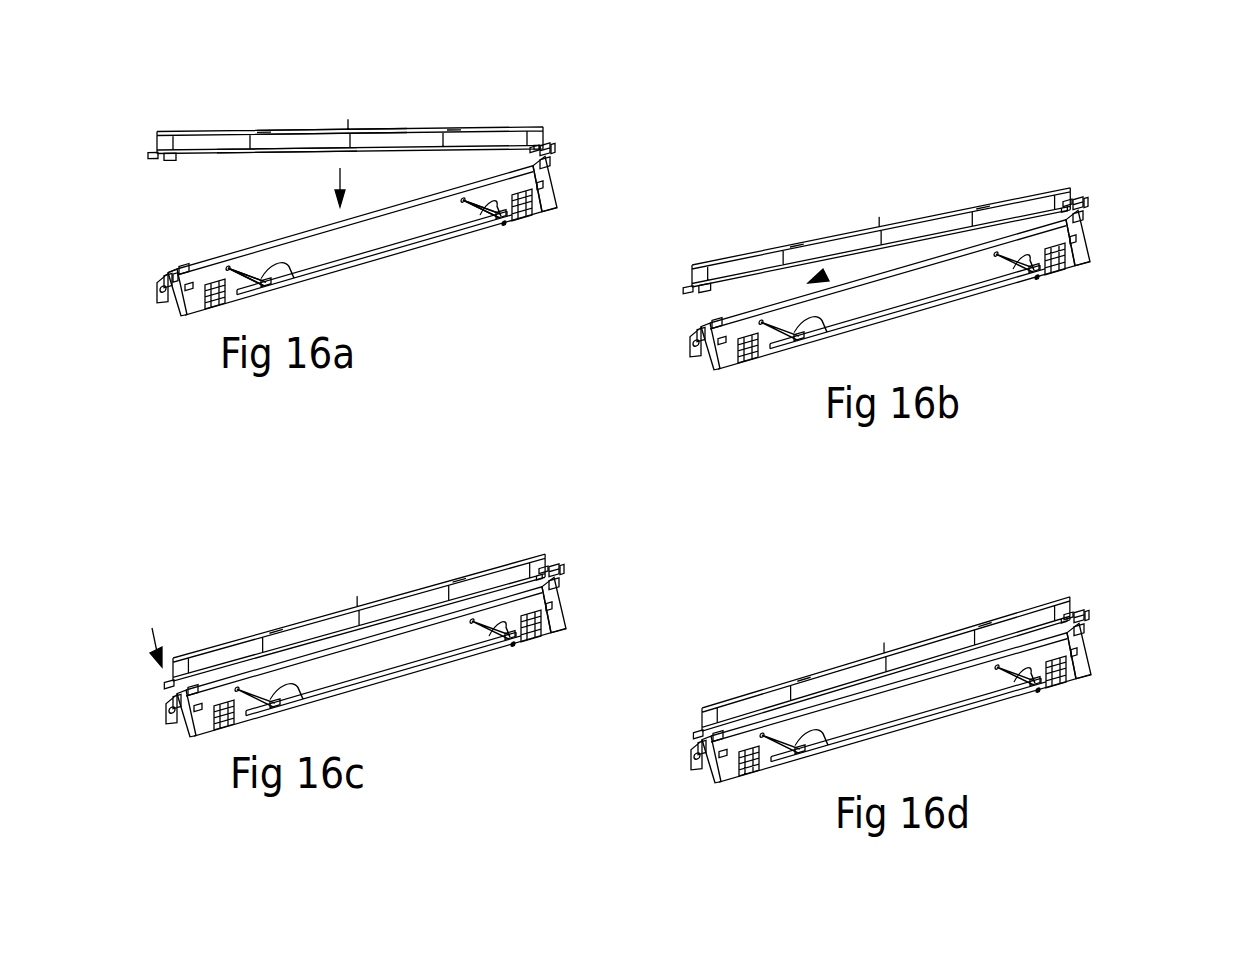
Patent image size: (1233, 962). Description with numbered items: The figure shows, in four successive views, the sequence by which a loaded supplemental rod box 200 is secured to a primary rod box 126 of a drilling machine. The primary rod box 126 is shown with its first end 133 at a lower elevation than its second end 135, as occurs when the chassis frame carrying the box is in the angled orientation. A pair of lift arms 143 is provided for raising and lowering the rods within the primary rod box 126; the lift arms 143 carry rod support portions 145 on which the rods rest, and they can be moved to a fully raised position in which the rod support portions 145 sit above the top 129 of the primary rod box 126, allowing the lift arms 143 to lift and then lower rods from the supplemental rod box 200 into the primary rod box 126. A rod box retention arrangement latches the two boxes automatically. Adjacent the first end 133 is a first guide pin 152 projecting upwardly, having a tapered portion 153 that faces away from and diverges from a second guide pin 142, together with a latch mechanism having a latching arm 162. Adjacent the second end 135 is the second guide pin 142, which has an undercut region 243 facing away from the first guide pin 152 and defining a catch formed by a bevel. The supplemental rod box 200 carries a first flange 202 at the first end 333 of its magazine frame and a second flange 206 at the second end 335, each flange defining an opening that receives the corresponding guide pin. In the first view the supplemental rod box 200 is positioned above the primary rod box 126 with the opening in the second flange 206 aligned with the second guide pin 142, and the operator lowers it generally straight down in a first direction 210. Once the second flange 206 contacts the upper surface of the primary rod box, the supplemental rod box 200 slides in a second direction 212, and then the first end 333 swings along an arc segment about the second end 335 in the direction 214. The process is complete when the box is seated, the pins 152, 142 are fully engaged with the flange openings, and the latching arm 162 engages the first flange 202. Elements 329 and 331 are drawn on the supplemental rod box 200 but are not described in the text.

In FIG. 16A, the supplemental rod box 200 is at (424, 108).
In FIG. 16B, the supplemental rod box 200 is at (929, 196).
In FIG. 16C, the supplemental rod box 200 is at (409, 574).
In FIG. 16D, the supplemental rod box 200 is at (934, 624).
In FIG. 16A, the primary rod box 126 is at (576, 191).
In FIG. 16B, the primary rod box 126 is at (1104, 239).
In FIG. 16C, the primary rod box 126 is at (579, 609).
In FIG. 16D, the primary rod box 126 is at (1104, 654).
In FIG. 16A, the top of the primary rod box 129 is at (197, 264).
In FIG. 16A, the first end of the rod box 133 is at (178, 308).
In FIG. 16B, the first end of the rod box 133 is at (710, 358).
In FIG. 16C, the first end of the rod box 133 is at (187, 725).
In FIG. 16D, the first end of the rod box 133 is at (712, 773).
In FIG. 16A, the second end of the rod box 135 is at (558, 200).
In FIG. 16B, the second end of the rod box 135 is at (1093, 257).
In FIG. 16C, the second end of the rod box 135 is at (569, 622).
In FIG. 16D, the second end of the rod box 135 is at (1093, 666).
In FIG. 16A, the second guide pin 142 is at (550, 165).
In FIG. 16B, the second guide pin 142 is at (1092, 215).
In FIG. 16C, the second guide pin 142 is at (562, 581).
In FIG. 16D, the second guide pin 142 is at (1085, 627).
In FIG. 16A, the lift arms 143 is at (288, 279).
In FIG. 16B, the lift arms 143 is at (818, 328).
In FIG. 16C, the lift arms 143 is at (298, 695).
In FIG. 16D, the lift arms 143 is at (818, 740).
In FIG. 16A, the rod support portions 145 is at (228, 266).
In FIG. 16A, the first guide pin 152 is at (168, 268).
In FIG. 16A, the tapered portion 153 is at (165, 271).
In FIG. 16A, the latching arm 162 is at (158, 275).
In FIG. 16A, the first flange 202 is at (150, 160).
In FIG. 16B, the first flange 202 is at (690, 297).
In FIG. 16A, the second flange 206 is at (554, 152).
In FIG. 16B, the second flange 206 is at (1092, 219).
In FIG. 16A, the first direction 210 is at (336, 179).
In FIG. 16B, the second direction 212 is at (842, 268).
In FIG. 16C, the arc direction 214 is at (150, 630).
In FIG. 16A, the undercut region 243 is at (550, 170).
In FIG. 16A, the top wall of cover 329 is at (318, 125).
In FIG. 16A, the bottom edge of cover 331 is at (270, 156).
In FIG. 16A, the first end of the magazine frame 333 is at (150, 150).
In FIG. 16B, the first end of the magazine frame 333 is at (692, 278).
In FIG. 16C, the first end of the magazine frame 333 is at (176, 672).
In FIG. 16D, the first end of the magazine frame 333 is at (704, 720).
In FIG. 16A, the second end of the magazine frame 335 is at (546, 148).
In FIG. 16B, the second end of the magazine frame 335 is at (1080, 210).
In FIG. 16C, the second end of the magazine frame 335 is at (553, 570).
In FIG. 16D, the second end of the magazine frame 335 is at (1077, 620).